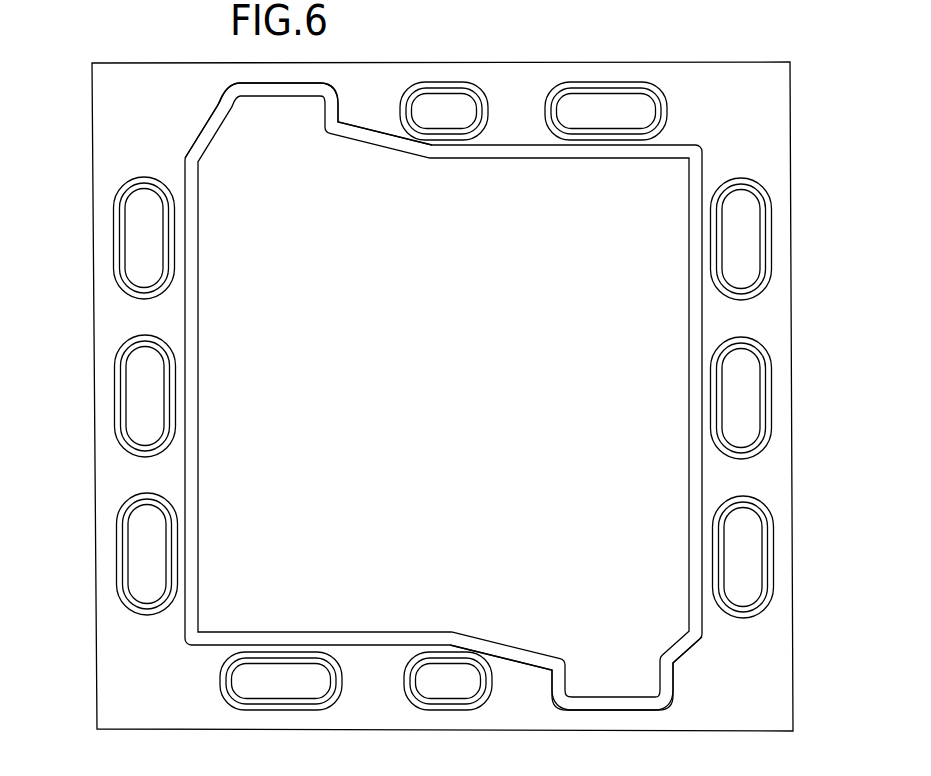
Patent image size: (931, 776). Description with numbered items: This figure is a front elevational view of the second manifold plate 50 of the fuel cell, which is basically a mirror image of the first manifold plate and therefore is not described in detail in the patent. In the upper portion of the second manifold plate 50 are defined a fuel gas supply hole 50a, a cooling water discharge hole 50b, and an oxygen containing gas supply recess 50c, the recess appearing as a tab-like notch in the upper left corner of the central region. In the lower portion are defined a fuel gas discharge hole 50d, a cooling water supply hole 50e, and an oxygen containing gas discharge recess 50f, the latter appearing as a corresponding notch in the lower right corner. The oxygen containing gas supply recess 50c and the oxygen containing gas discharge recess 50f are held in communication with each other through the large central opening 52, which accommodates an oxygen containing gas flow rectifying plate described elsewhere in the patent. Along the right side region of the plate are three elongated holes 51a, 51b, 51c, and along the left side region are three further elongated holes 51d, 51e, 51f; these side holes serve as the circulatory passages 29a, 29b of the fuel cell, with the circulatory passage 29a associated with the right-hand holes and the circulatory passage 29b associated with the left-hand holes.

The second manifold plate 50 is at (558, 53).
The opening 52 is at (438, 424).
The fuel gas supply hole 50a is at (603, 113).
The cooling water discharge hole 50b is at (443, 113).
The oxygen containing gas supply recess 50c is at (277, 108).
The fuel gas discharge hole 50d is at (280, 677).
The cooling water supply hole 50e is at (443, 682).
The oxygen containing gas discharge recess 50f is at (605, 685).
The hole 51a is at (750, 248).
The hole 51b is at (784, 396).
The hole 51c is at (753, 577).
The hole 51d is at (137, 232).
The hole 51e is at (103, 394).
The hole 51f is at (142, 567).
The circulatory passage 29a is at (760, 427).
The circulatory passage 29b is at (135, 405).